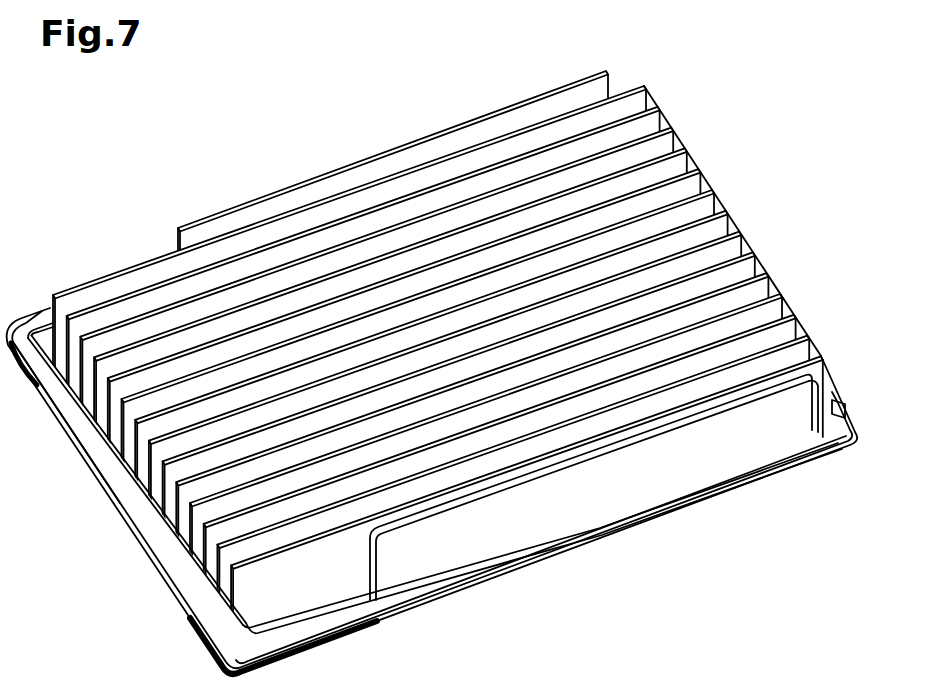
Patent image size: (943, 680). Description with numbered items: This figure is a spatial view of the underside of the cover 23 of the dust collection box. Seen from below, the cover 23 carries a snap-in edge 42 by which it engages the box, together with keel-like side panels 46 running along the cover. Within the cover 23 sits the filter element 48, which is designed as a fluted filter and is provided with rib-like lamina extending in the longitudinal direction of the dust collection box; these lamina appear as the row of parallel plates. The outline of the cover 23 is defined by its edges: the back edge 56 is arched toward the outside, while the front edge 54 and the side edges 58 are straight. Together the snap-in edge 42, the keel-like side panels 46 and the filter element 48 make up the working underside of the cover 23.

The cover 23 is at (240, 176).
The snap-in edge 42 is at (832, 404).
The keel-like side panels 46 is at (462, 130).
The filter element 48 is at (670, 127).
The straight front edge 54 is at (150, 547).
The back edge 56 is at (736, 194).
The straight side edges 58 is at (420, 605).